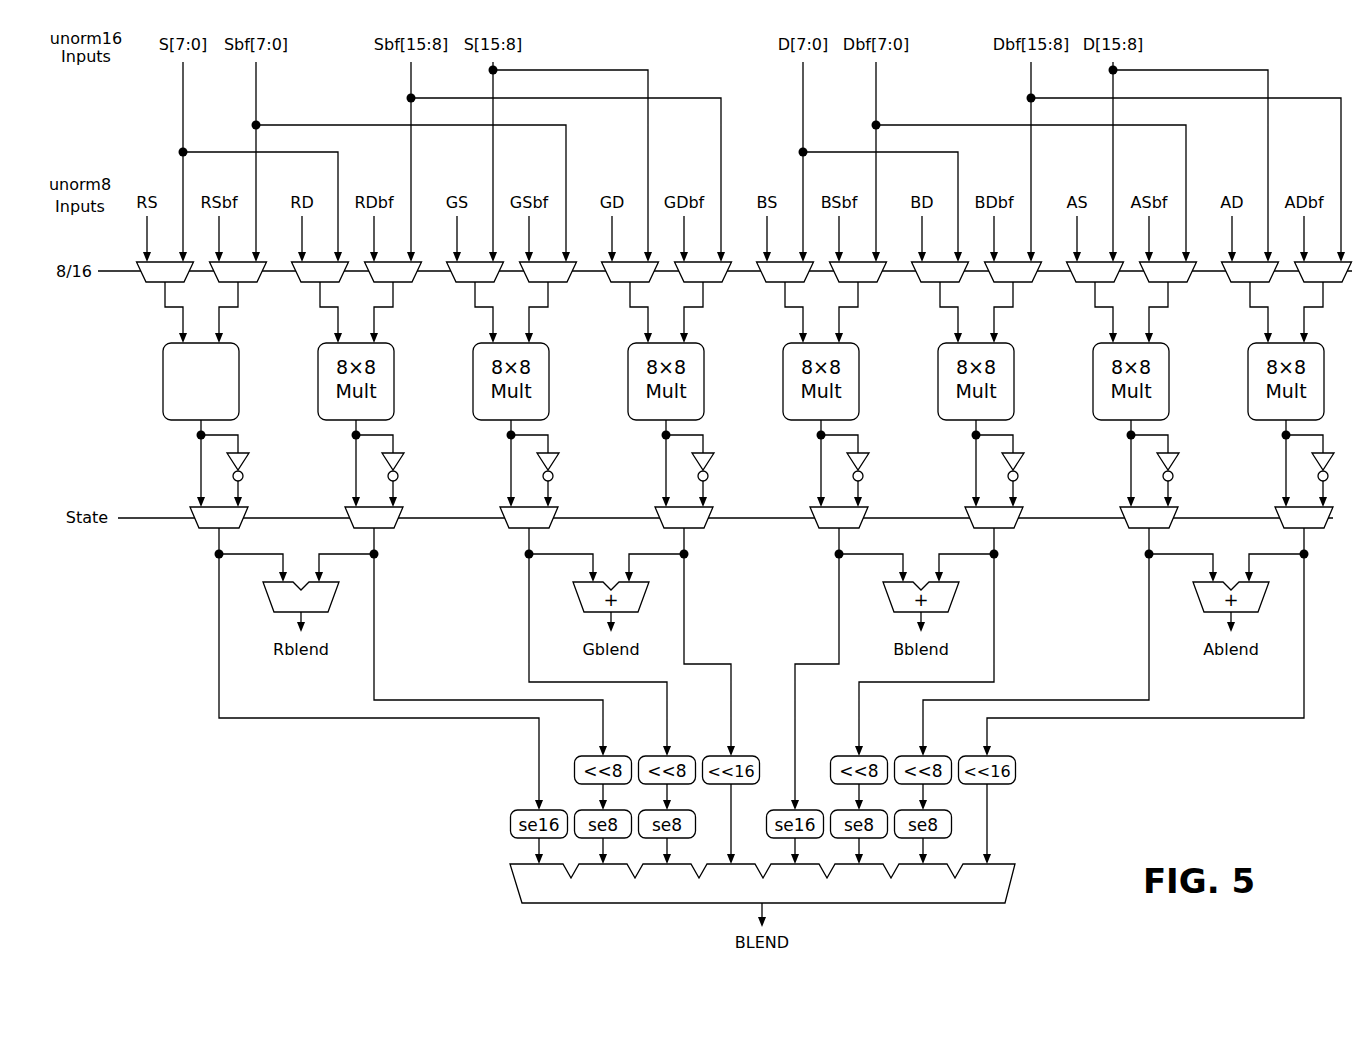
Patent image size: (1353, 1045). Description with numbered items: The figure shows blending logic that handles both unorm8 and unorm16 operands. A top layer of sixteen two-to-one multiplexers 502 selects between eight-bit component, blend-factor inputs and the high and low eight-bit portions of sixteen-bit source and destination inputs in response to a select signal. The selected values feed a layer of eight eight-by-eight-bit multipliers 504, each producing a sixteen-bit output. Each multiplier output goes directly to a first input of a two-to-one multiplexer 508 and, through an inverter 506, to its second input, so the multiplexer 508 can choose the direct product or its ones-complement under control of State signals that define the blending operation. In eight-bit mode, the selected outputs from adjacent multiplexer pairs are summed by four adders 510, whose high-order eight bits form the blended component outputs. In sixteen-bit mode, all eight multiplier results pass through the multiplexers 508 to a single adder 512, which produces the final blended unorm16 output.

The 2:1 multiplexer 502 is at (257, 283).
The 8×8-bit multiplier 504 is at (240, 371).
The inverter 506 is at (249, 461).
The 2:1 multiplexer 508 is at (192, 522).
The adder 510 is at (268, 598).
The adder 512 is at (1015, 880).